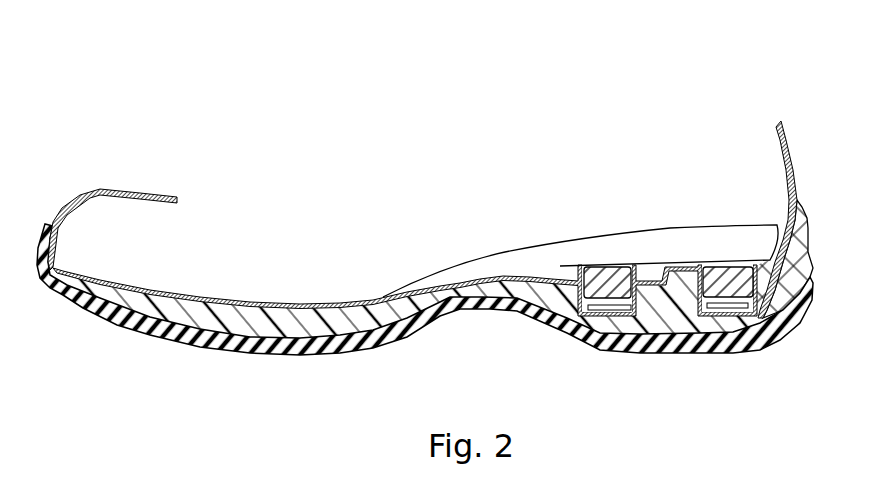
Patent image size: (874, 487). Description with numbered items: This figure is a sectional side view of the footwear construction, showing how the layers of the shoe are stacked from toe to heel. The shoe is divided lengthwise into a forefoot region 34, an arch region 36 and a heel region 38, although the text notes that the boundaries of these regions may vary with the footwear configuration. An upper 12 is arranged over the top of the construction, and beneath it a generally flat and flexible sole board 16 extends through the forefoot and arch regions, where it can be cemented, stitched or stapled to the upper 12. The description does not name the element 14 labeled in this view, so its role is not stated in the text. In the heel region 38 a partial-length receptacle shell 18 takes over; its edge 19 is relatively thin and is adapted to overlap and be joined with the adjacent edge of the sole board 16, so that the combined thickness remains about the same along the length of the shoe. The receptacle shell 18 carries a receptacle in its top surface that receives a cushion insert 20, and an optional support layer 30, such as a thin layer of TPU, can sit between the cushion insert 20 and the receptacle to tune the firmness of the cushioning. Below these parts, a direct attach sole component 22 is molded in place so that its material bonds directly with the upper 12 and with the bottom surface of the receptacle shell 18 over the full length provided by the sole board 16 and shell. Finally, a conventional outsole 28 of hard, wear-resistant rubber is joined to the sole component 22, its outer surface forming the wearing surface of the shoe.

The upper 12 is at (788, 131).
The upper cover layer 14 is at (727, 225).
The sole board 16 is at (197, 297).
The receptacle shell 18 is at (552, 280).
The edge of the receptacle shell 19 is at (377, 300).
The cushion insert 20 is at (636, 265).
The direct attach sole component 22 is at (807, 220).
The outsole 28 is at (812, 287).
The support layer 30 is at (736, 307).
The forefoot region 34 is at (135, 323).
The arch region 36 is at (517, 311).
The heel region 38 is at (765, 333).